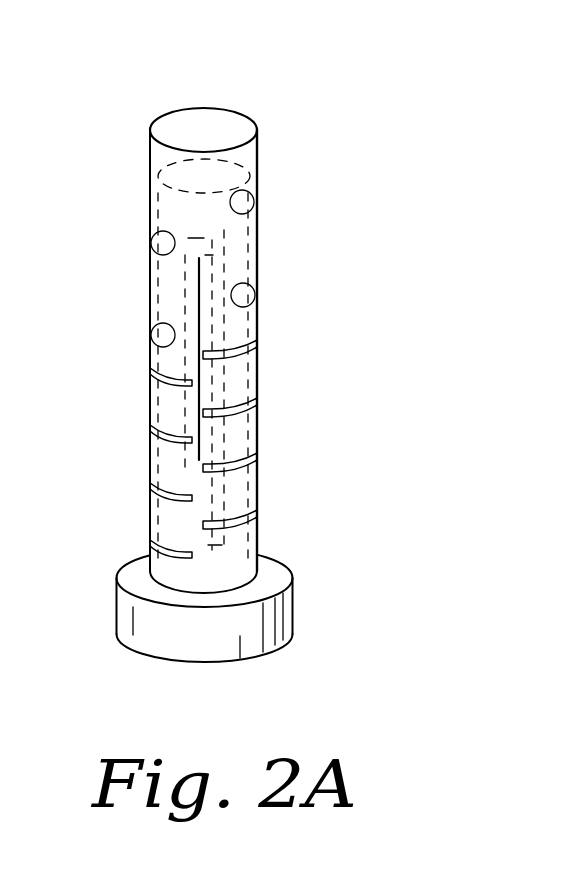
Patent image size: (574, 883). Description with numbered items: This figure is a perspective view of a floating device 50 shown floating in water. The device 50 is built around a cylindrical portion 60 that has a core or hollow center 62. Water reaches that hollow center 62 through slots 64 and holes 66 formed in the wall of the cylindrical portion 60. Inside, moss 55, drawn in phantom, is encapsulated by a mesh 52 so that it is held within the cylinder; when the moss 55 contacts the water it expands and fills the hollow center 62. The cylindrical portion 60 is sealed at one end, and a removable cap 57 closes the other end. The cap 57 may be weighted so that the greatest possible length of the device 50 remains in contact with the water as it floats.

The device 50 is at (334, 96).
The mesh 52 is at (260, 329).
The moss 55 is at (258, 474).
The removable cap 57 is at (258, 612).
The cylindrical portion 60 is at (257, 162).
The hollow center 62 is at (258, 253).
The slots 64 is at (178, 442).
The holes 66 is at (165, 243).